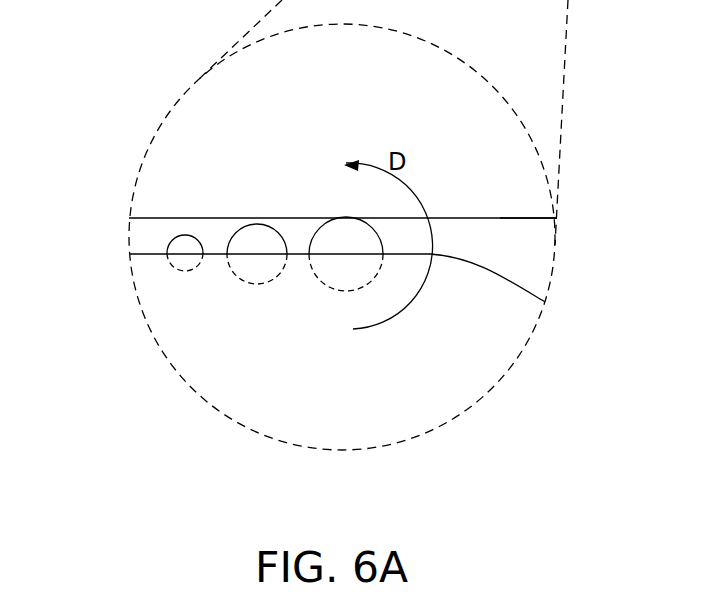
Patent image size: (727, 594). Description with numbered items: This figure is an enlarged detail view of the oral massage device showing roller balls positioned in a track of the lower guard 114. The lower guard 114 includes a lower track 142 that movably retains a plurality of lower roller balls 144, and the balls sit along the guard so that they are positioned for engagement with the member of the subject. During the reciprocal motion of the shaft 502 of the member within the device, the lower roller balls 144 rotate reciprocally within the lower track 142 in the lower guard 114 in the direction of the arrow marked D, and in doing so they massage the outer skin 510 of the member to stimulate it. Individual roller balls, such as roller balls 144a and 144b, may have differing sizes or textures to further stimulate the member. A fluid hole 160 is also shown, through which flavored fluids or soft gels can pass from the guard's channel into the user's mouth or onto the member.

The shaft 502 is at (498, 122).
The lower track 142 is at (174, 208).
The outer skin 510 is at (507, 218).
The lower guard 114 is at (517, 284).
The fluid hole 160 is at (178, 269).
The lower roller balls 144 is at (280, 186).
The roller ball 144a is at (345, 217).
The roller ball 144b is at (256, 222).